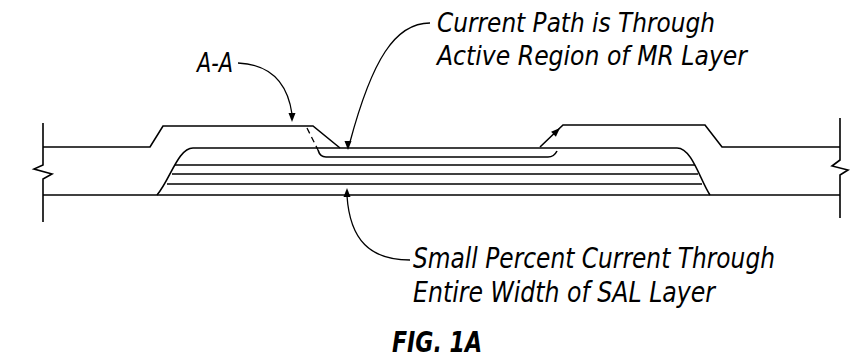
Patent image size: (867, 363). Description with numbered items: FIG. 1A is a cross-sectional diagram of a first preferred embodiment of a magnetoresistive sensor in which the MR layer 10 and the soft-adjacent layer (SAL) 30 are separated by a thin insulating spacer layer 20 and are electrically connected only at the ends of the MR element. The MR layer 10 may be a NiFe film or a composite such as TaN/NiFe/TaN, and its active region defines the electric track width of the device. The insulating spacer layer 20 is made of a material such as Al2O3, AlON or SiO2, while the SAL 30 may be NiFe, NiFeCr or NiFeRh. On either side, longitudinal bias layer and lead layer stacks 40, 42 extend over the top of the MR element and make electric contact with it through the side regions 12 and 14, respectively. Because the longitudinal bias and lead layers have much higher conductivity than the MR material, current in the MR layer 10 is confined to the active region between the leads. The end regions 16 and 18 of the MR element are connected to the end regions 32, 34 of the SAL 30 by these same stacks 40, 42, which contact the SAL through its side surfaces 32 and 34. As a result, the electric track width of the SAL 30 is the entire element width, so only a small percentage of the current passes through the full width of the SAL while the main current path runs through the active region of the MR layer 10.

The MR layer 10 is at (410, 150).
The side region 12 is at (297, 158).
The side region 14 is at (581, 155).
The end region 16 is at (196, 157).
The end region 18 is at (672, 160).
The insulating spacer layer 20 is at (508, 172).
The soft-adjacent layer (SAL) 30 is at (487, 190).
The end region of SAL 32 is at (188, 190).
The end region of SAL 34 is at (683, 187).
The longitudinal bias layer and lead layer stack 40 is at (115, 188).
The longitudinal bias layer and lead layer stack 42 is at (760, 185).